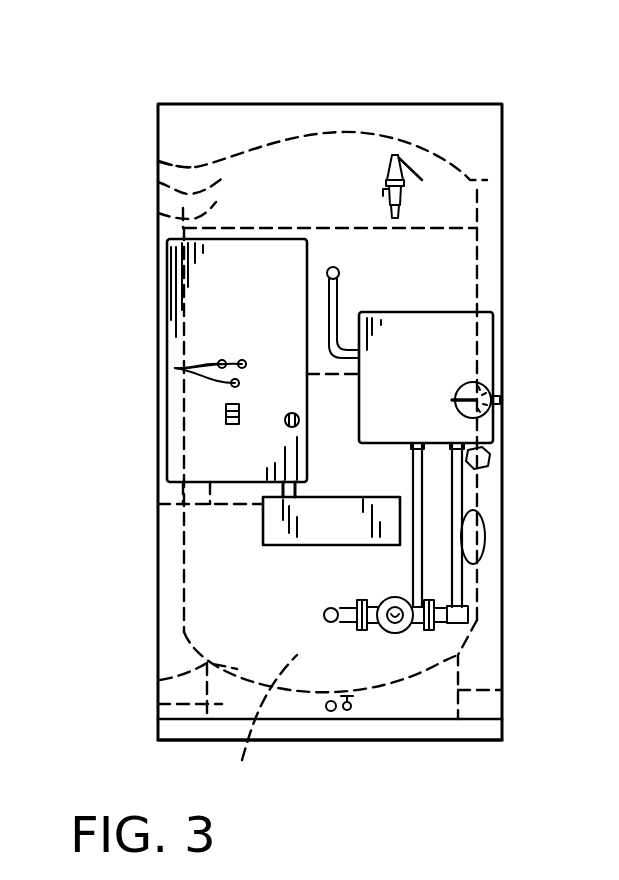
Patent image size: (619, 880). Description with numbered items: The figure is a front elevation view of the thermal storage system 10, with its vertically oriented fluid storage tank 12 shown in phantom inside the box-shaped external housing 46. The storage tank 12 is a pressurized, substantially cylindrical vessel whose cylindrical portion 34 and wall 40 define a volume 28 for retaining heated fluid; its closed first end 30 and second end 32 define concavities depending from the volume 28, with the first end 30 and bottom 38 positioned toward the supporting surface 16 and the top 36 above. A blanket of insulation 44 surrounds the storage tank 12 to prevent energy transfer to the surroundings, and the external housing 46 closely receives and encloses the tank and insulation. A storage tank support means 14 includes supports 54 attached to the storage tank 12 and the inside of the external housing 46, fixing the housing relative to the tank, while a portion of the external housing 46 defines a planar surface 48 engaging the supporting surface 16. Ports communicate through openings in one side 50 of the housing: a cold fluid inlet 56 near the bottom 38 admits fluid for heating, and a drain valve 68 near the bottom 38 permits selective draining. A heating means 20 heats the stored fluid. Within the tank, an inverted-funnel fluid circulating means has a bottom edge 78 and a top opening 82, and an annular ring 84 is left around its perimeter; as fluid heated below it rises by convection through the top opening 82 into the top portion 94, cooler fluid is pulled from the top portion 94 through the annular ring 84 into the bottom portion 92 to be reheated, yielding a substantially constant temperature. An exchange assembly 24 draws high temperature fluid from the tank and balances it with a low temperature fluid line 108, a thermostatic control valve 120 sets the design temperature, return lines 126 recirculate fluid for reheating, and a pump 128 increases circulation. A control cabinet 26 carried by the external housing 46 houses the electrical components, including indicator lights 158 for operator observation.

The thermal storage system 10 is at (542, 193).
The fluid storage tank 12 is at (478, 180).
The storage tank support means 14 is at (508, 691).
The supporting surface 16 is at (473, 738).
The heating means 20 is at (343, 531).
The exchange assembly 24 is at (463, 332).
The control cabinet 26 is at (218, 330).
The volume 28 is at (455, 272).
The first end 30 is at (160, 680).
The second end 32 is at (158, 161).
The cylindrical portion 34 is at (180, 560).
The top 36 is at (158, 182).
The bottom 38 is at (198, 634).
The storage tank wall 40 is at (158, 213).
The insulation 44 is at (450, 141).
The external housing 46 is at (483, 103).
The planar surface 48 is at (445, 742).
The side 50 is at (488, 624).
The supports 54 is at (158, 706).
The cold fluid inlet 56 is at (331, 623).
The drain valve 68 is at (335, 712).
The bottom edge 78 is at (158, 505).
The top opening 82 is at (322, 343).
The annular ring 84 is at (483, 477).
The bottom portion 92 is at (250, 717).
The top portion 94 is at (332, 170).
The low temperature fluid line 108 is at (420, 490).
The thermostatic control valve 120 is at (490, 385).
The return lines 126 is at (440, 528).
The pump 128 is at (395, 625).
The indicator lights 158 is at (175, 368).